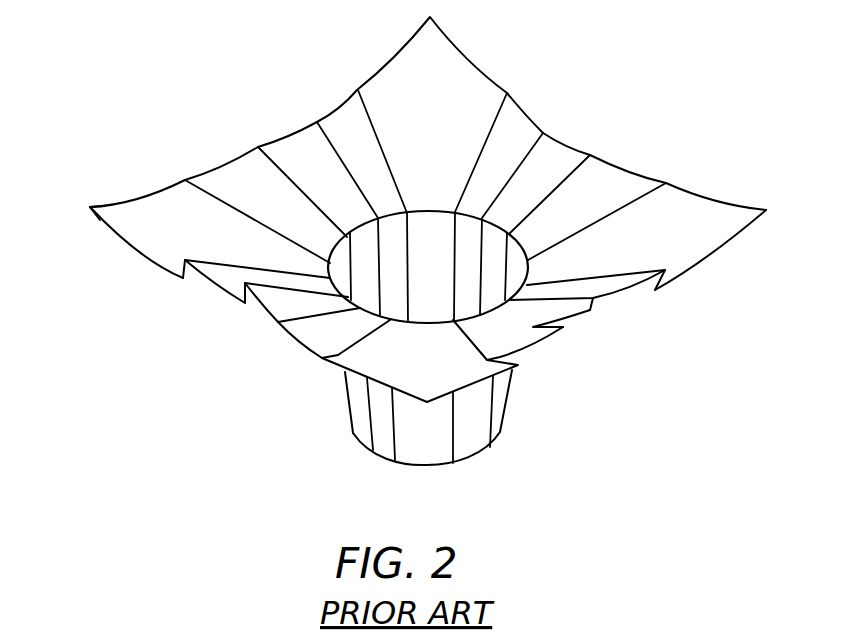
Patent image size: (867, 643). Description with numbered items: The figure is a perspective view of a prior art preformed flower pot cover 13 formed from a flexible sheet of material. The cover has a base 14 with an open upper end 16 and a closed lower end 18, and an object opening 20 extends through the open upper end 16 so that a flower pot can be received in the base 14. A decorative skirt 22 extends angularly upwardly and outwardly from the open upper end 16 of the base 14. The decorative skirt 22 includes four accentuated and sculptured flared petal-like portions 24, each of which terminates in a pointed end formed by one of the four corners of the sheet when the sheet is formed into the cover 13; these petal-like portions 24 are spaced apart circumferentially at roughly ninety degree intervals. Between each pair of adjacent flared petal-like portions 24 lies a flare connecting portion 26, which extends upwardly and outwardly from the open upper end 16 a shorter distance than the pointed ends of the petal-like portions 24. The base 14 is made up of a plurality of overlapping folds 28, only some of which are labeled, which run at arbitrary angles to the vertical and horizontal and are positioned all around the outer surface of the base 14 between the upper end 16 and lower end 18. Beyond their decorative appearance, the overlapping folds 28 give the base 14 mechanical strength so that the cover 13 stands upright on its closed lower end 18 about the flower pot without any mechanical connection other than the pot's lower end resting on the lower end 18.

The preformed flower pot cover 13 is at (724, 311).
The base 14 is at (503, 402).
The open upper end 16 is at (467, 228).
The closed lower end 18 is at (374, 452).
The object opening 20 is at (368, 152).
The decorative skirt 22 is at (135, 200).
The flared petal-like portion 24 is at (108, 232).
The flare connecting portion 26 is at (208, 170).
The overlapping fold 28 is at (362, 420).